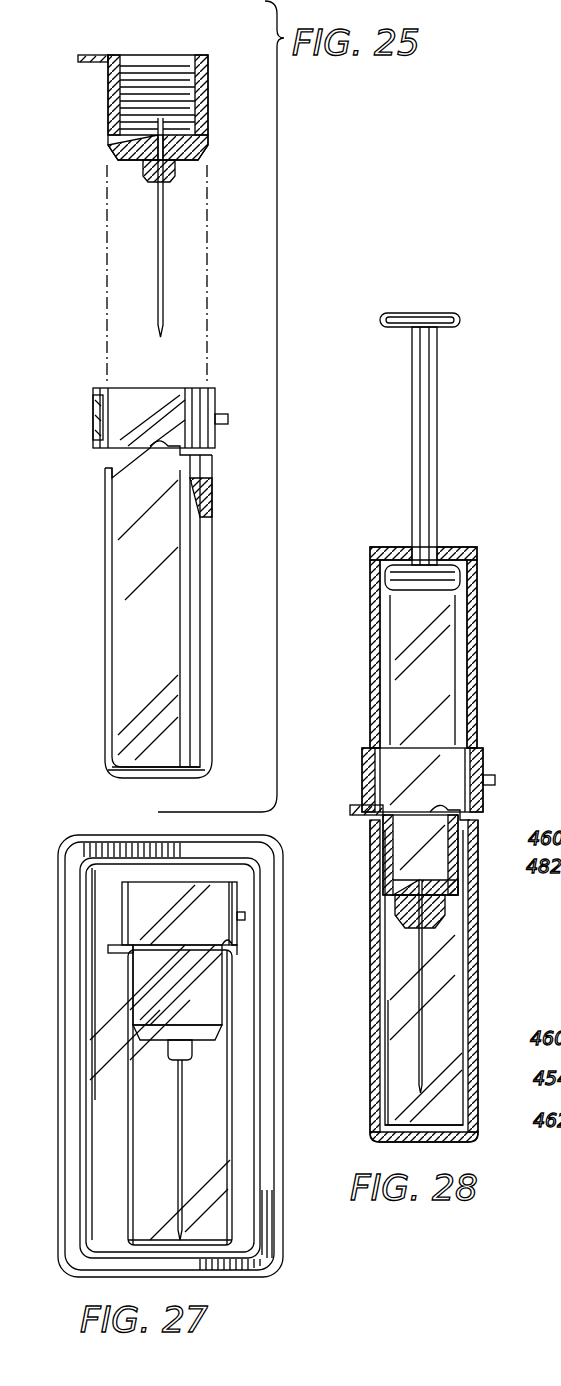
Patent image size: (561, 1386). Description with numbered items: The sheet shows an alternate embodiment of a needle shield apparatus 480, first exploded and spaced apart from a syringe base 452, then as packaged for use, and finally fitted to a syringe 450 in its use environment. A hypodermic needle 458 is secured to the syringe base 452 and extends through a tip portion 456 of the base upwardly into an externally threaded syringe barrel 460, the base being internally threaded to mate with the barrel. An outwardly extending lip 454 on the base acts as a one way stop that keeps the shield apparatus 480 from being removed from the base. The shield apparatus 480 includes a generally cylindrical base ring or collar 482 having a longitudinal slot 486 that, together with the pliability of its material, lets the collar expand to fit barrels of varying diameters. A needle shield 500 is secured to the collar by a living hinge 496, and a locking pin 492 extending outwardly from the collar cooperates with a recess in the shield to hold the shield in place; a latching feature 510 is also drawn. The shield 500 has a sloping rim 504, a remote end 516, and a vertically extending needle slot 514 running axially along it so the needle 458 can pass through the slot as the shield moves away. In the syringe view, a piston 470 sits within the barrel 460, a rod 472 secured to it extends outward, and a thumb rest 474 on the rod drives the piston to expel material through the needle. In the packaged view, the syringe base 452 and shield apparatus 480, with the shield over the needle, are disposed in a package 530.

In FIG. 28, the syringe 450 is at (478, 580).
In FIG. 25, the syringe base 452 is at (208, 62).
In FIG. 27, the syringe base 452 is at (135, 958).
In FIG. 28, the syringe base 452 is at (383, 850).
In FIG. 25, the lip 454 is at (90, 64).
In FIG. 27, the lip 454 is at (108, 948).
In FIG. 28, the lip 454 is at (360, 816).
In FIG. 25, the tip portion 456 is at (205, 145).
In FIG. 27, the tip portion 456 is at (180, 1050).
In FIG. 28, the tip portion 456 is at (455, 905).
In FIG. 25, the hypodermic needle 458 is at (166, 270).
In FIG. 27, the hypodermic needle 458 is at (183, 1210).
In FIG. 28, the hypodermic needle 458 is at (419, 1050).
In FIG. 28, the syringe barrel 460 is at (477, 660).
In FIG. 28, the piston 470 is at (440, 562).
In FIG. 28, the rod 472 is at (437, 430).
In FIG. 28, the thumb rest 474 is at (455, 318).
In FIG. 25, the needle shield apparatus 480 is at (215, 380).
In FIG. 27, the needle shield apparatus 480 is at (125, 1118).
In FIG. 28, the needle shield apparatus 480 is at (370, 1112).
In FIG. 25, the base ring 482 is at (215, 390).
In FIG. 27, the base ring 482 is at (215, 887).
In FIG. 28, the base ring 482 is at (362, 775).
In FIG. 25, the longitudinal slot 486 is at (93, 415).
In FIG. 25, the locking pin 492 is at (228, 414).
In FIG. 27, the locking pin 492 is at (245, 916).
In FIG. 28, the locking pin 492 is at (495, 780).
In FIG. 25, the living hinge 496 is at (212, 455).
In FIG. 25, the needle shield 500 is at (212, 695).
In FIG. 27, the needle shield 500 is at (150, 1172).
In FIG. 28, the needle shield 500 is at (450, 1143).
In FIG. 25, the sloping rim 504 is at (105, 468).
In FIG. 25, the latch 510 is at (212, 495).
In FIG. 25, the needle slot 514 is at (112, 624).
In FIG. 28, the needle slot 514 is at (375, 980).
In FIG. 25, the end 516 is at (175, 780).
In FIG. 27, the end 516 is at (215, 1272).
In FIG. 27, the package 530 is at (284, 993).